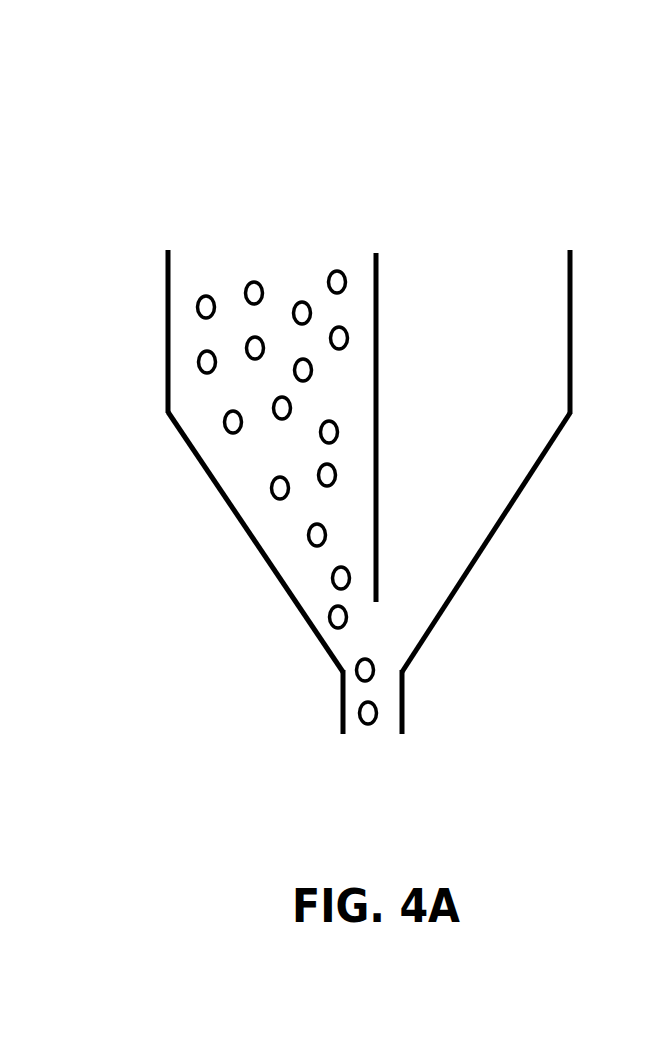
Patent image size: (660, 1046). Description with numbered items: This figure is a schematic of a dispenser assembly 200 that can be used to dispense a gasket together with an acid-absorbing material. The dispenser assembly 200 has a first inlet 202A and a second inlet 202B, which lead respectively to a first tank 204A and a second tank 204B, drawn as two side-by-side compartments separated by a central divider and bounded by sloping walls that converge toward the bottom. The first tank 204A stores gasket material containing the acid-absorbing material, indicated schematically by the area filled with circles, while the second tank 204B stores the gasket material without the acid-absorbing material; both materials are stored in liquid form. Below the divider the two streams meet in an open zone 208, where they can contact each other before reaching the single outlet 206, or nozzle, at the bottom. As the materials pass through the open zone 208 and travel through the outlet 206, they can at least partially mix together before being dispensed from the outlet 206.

The dispenser assembly 200 is at (349, 128).
The first inlet 202A is at (249, 248).
The second inlet 202B is at (478, 250).
The first tank 204A is at (223, 498).
The second tank 204B is at (472, 562).
The outlet 206 is at (369, 760).
The open zone 208 is at (401, 626).